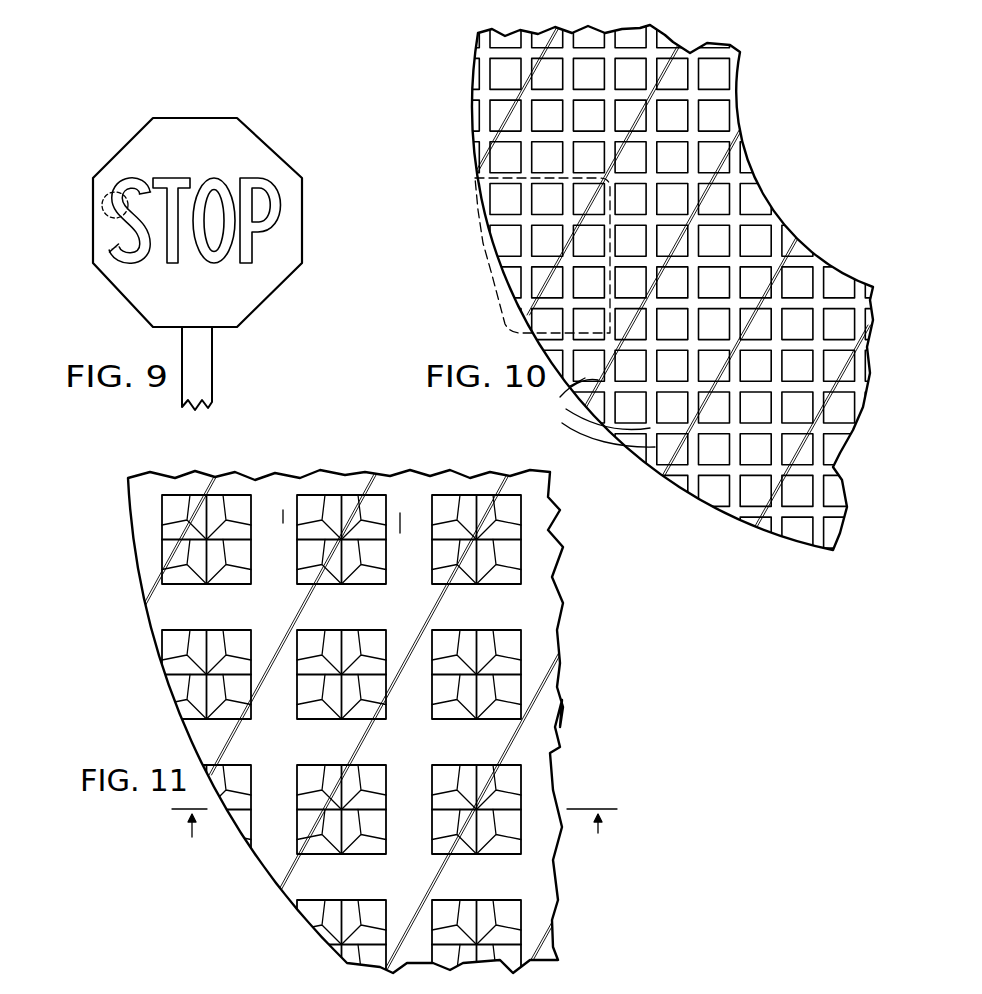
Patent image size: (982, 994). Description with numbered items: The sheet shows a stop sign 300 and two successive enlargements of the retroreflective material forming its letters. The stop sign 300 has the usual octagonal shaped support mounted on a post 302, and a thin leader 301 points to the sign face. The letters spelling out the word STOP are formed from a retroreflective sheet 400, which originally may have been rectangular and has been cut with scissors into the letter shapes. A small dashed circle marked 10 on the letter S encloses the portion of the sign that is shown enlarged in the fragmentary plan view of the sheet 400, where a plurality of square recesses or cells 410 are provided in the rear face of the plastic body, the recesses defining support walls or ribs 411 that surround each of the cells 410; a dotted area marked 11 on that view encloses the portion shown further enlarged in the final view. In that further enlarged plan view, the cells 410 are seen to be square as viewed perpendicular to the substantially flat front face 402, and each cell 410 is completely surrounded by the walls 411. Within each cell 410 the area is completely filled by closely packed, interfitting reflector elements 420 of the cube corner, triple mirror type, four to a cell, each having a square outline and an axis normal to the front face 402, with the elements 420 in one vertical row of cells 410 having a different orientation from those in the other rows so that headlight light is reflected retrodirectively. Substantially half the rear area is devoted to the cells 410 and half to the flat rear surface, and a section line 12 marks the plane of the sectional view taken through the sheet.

In FIG. 9, the stop sign 300 is at (170, 248).
In FIG. 9, the sign face panel 301 is at (190, 132).
In FIG. 9, the post 302 is at (204, 355).
In FIG. 9, the circle marked 10 is at (103, 213).
In FIG. 10, the retroreflective sheet 400 is at (766, 153).
In FIG. 11, the retroreflective sheet 400 is at (124, 506).
In FIG. 10, the recesses or cells 410 is at (490, 96).
In FIG. 11, the recesses or cells 410 is at (334, 742).
In FIG. 10, the support walls or ribs 411 is at (580, 392).
In FIG. 11, the support walls or ribs 411 is at (400, 513).
In FIG. 10, the dotted area marked 11 is at (473, 195).
In FIG. 11, the front face 402 is at (297, 616).
In FIG. 11, the reflector elements 420 is at (148, 695).
In FIG. 11, the section line 12- 12 is at (394, 836).